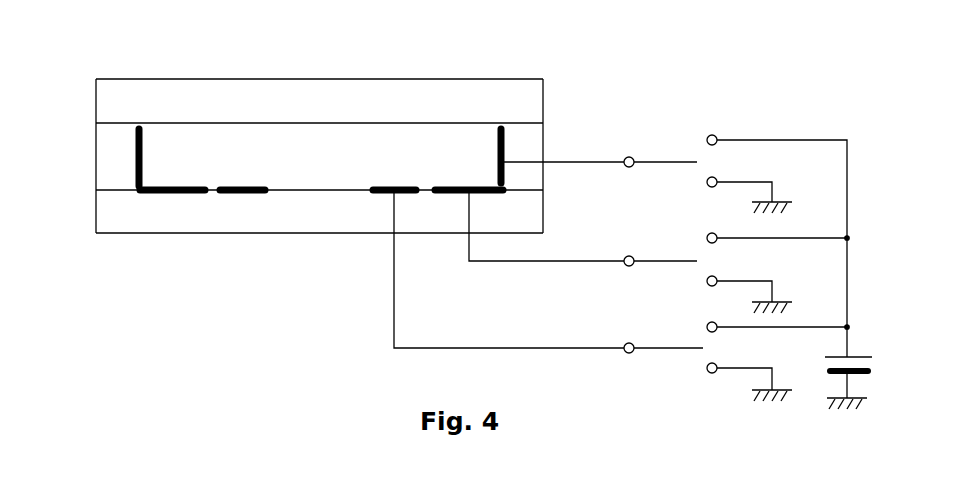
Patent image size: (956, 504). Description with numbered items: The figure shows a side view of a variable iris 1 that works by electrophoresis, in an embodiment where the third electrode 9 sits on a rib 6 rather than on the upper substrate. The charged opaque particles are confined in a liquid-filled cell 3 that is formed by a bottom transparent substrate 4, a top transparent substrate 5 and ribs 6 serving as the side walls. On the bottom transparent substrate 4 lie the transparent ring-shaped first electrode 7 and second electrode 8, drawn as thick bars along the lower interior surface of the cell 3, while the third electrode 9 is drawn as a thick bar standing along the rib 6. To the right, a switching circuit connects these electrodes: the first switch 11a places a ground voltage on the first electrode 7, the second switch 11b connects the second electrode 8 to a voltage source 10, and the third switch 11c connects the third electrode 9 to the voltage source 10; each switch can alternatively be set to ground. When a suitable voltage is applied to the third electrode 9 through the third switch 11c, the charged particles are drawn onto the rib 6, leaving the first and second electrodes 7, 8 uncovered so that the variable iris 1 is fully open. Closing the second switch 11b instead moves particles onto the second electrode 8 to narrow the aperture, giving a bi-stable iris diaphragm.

The variable iris 1 is at (202, 50).
The cell 3 is at (332, 140).
The bottom transparent substrate 4 is at (320, 232).
The top transparent substrate 5 is at (362, 78).
The rib 6 is at (97, 160).
The first electrode 7 is at (173, 195).
The second electrode 8 is at (245, 195).
The third electrode 9 is at (136, 138).
The voltage source 10 is at (826, 366).
The first switch 11a is at (675, 272).
The second switch 11b is at (675, 360).
The third switch 11c is at (675, 172).